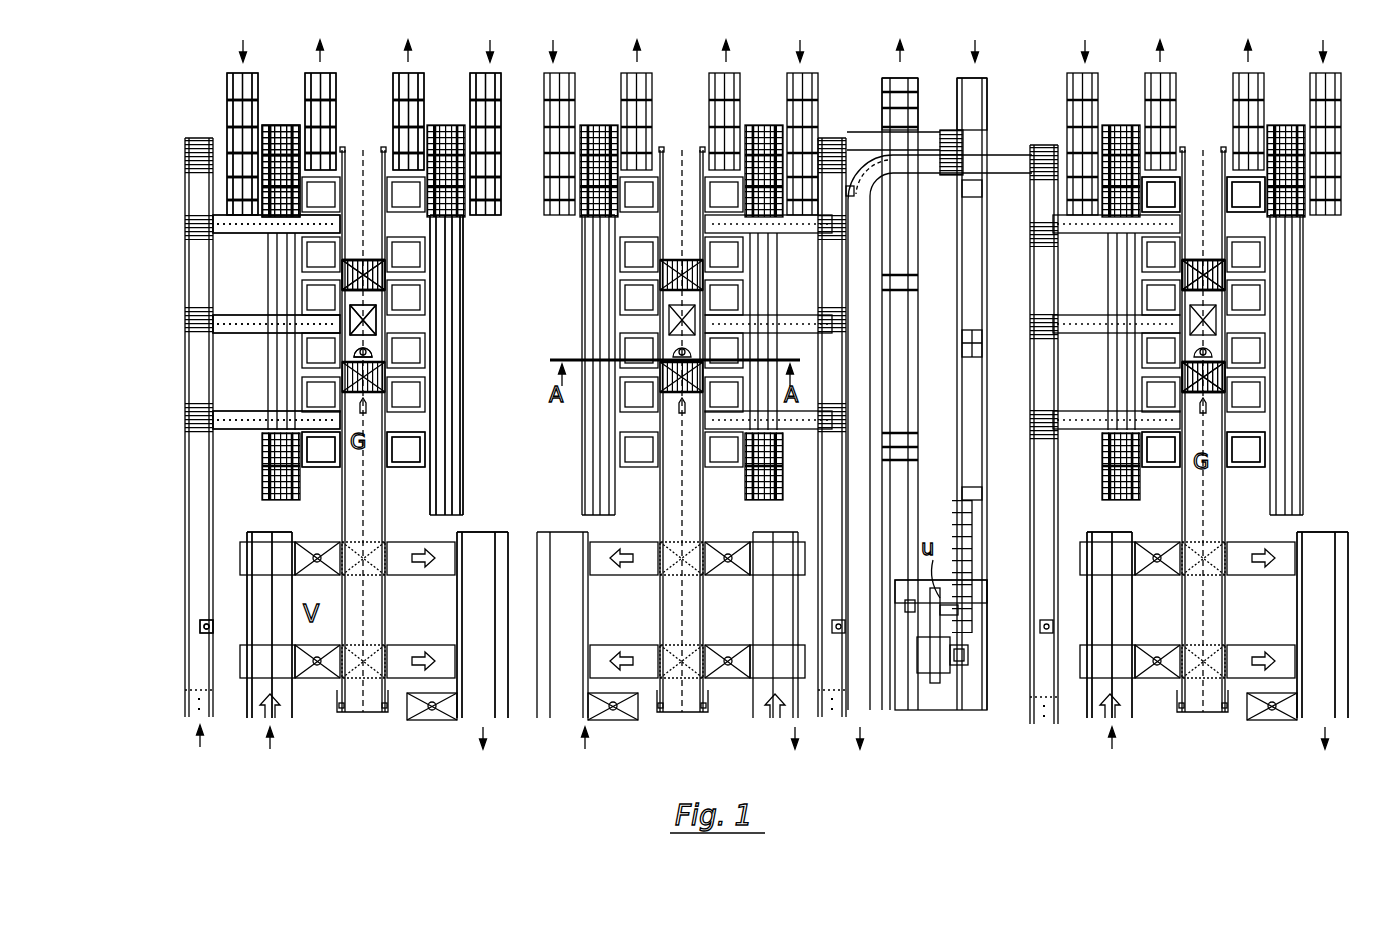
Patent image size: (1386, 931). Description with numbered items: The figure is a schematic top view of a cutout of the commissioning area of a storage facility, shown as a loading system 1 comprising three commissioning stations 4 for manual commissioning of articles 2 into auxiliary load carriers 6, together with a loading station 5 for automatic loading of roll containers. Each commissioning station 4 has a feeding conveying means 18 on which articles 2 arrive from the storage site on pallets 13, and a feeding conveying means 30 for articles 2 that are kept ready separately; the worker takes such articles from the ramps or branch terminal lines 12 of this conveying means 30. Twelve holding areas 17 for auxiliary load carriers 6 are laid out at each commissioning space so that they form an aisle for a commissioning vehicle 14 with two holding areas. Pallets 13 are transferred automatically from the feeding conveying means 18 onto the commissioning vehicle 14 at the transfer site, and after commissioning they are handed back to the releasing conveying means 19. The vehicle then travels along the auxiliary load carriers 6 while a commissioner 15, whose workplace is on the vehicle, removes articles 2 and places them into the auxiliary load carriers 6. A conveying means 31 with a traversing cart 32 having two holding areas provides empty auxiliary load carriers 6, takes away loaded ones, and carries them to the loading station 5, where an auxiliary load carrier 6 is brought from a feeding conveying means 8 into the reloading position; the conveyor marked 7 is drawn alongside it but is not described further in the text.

The storage system 1 is at (750, 472).
The articles 2 is at (201, 628).
The commissioning station 4 is at (349, 795).
The loading station 5 is at (934, 755).
The auxiliary load carrier 6 is at (319, 460).
The infeed conveyor 7 is at (237, 50).
The feeding conveying means 8 is at (323, 50).
The branch terminal lines 12 is at (236, 236).
The pallets 13 is at (1199, 270).
The commissioning vehicle 14 is at (363, 236).
The commissioner 15 is at (365, 331).
The holding areas 17 is at (1240, 200).
The feeding conveying means 18 is at (276, 745).
The releasing conveying means 19 is at (488, 745).
The feeding conveying means 30 is at (196, 746).
The conveying means 31 is at (446, 321).
The traversing cart 32 is at (283, 150).